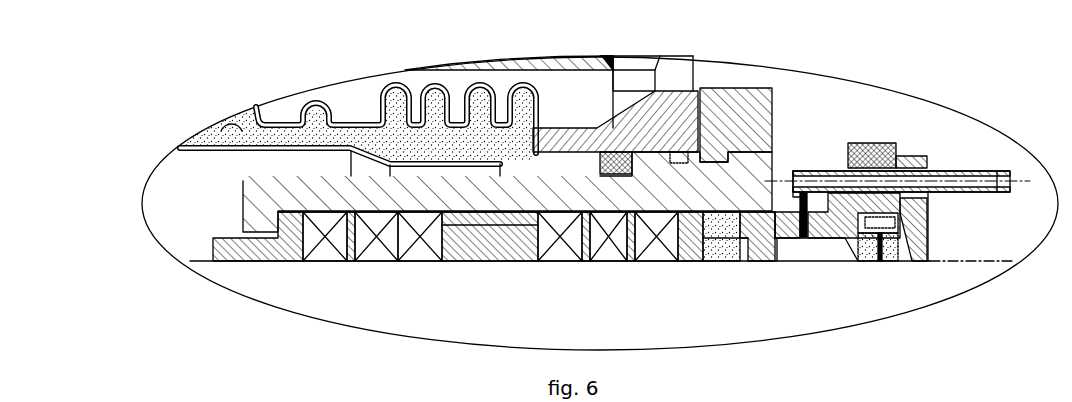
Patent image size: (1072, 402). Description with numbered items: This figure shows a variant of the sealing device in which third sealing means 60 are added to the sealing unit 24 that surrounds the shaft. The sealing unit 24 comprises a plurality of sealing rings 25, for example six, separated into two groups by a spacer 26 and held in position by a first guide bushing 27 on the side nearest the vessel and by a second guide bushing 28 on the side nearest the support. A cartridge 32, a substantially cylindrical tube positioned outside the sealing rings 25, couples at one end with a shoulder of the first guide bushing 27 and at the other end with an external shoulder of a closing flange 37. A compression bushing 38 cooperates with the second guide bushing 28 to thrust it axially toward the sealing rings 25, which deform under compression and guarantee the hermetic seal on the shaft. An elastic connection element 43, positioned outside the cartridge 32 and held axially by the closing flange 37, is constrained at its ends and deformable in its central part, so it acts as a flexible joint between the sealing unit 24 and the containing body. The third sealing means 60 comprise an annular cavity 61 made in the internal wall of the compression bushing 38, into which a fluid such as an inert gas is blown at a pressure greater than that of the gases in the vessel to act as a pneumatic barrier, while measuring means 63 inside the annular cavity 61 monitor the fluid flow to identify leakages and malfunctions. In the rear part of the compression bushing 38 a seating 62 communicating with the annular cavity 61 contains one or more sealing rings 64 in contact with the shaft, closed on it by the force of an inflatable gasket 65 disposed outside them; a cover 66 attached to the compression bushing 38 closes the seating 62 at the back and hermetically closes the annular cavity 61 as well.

The sealing unit 24 is at (178, 181).
The elastic connection element 43 is at (528, 116).
The closing flange 37 is at (736, 126).
The cartridge 32 is at (288, 196).
The first guide bushing 27 is at (298, 257).
The sealing rings 25 is at (315, 238).
The spacer 26 is at (495, 262).
The second guide bushing 28 is at (703, 248).
The compression bushing 38 is at (763, 238).
The third sealing means 60 is at (897, 219).
The annular cavity 61 is at (785, 238).
The seating 62 is at (860, 258).
The measuring means 63 is at (943, 172).
The sealing rings 64 is at (870, 246).
The inflatable gasket 65 is at (887, 205).
The cover 66 is at (917, 220).